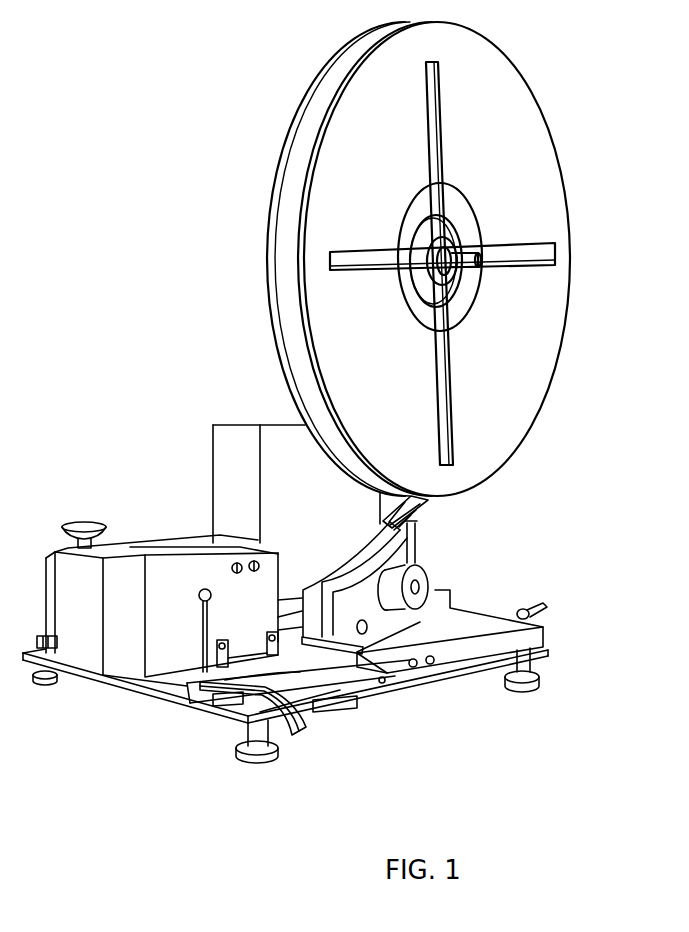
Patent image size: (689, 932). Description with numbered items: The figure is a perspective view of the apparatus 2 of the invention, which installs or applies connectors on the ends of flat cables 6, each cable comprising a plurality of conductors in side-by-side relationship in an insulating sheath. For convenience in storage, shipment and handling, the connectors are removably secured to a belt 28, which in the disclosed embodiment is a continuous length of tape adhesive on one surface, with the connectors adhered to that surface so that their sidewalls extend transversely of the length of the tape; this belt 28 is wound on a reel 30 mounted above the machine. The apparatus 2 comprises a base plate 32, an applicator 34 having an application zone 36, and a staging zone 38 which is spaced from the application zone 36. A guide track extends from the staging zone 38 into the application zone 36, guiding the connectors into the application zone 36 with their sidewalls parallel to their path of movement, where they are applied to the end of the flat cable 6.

The apparatus 2 is at (152, 358).
The flat cable 6 is at (291, 730).
The belt 28 is at (397, 540).
The reel 30 is at (540, 386).
The base plate 32 is at (165, 685).
The applicator 34 is at (157, 655).
The application zone 36 is at (203, 682).
The staging zone 38 is at (384, 682).